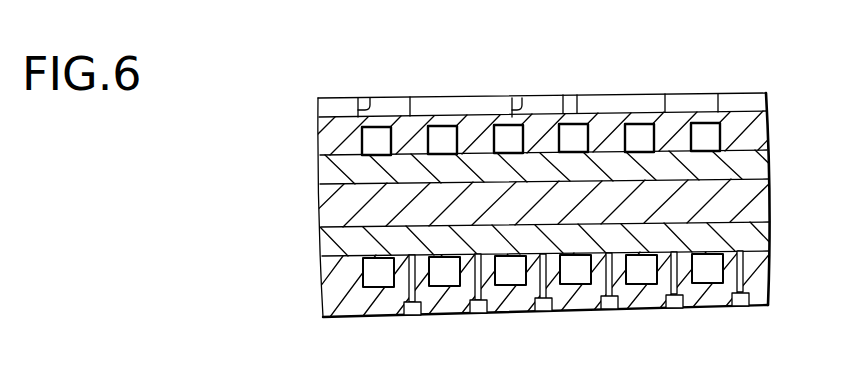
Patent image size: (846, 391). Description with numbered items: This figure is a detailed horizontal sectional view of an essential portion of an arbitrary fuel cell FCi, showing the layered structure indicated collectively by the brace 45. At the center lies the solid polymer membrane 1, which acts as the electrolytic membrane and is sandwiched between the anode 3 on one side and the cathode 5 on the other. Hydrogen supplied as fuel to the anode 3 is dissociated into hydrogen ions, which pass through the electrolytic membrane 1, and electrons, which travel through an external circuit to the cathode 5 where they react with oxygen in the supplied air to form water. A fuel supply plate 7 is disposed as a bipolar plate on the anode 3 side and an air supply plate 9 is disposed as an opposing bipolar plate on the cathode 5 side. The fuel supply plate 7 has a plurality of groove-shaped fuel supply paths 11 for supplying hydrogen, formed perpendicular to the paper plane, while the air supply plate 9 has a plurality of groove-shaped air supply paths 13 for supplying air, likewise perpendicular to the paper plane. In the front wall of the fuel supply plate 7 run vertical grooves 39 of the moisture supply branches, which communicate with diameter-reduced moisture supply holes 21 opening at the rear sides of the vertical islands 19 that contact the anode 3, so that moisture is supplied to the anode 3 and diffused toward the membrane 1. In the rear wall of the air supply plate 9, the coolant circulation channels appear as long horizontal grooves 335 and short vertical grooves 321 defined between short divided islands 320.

The semiconductor device stack 45 is at (230, 92).
The air supply plate 9 is at (319, 120).
The cathode 5 is at (320, 178).
The solid polymer membrane 1 is at (320, 212).
The anode 3 is at (321, 250).
The fuel supply plate 7 is at (321, 290).
The air supply paths 13 is at (694, 122).
The fuel supply paths 11 is at (641, 274).
The vertical grooves 39 is at (606, 311).
The moisture supply holes 21 is at (589, 297).
The vertical islands 19 is at (600, 252).
The short divided islands 320 is at (402, 98).
The short vertical grooves 321 is at (358, 98).
The long horizontal grooves 335 is at (577, 110).
The fuel cell FCi is at (627, 80).